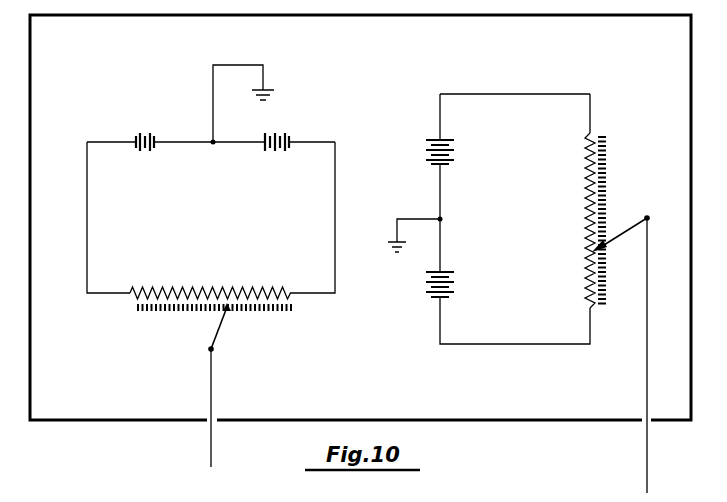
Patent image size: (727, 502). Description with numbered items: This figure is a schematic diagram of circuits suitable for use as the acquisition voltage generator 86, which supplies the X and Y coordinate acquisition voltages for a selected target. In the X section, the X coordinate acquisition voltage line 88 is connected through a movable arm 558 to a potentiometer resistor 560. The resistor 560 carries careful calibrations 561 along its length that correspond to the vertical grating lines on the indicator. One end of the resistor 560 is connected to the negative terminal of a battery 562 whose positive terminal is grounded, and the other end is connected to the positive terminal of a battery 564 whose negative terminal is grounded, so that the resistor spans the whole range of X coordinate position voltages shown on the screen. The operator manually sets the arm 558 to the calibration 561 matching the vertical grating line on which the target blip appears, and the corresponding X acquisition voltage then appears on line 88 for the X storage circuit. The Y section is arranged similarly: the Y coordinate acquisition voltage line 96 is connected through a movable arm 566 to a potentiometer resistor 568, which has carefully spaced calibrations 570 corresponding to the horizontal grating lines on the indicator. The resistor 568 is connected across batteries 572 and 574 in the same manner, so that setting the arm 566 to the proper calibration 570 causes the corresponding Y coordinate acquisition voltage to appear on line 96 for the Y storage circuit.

The acquisition voltage generator 86 is at (450, 421).
The X coordinate acquisition voltage line 88 is at (213, 446).
The Y coordinate acquisition voltage line 96 is at (648, 452).
The movable arm 558 is at (219, 330).
The potentiometer resistor 560 is at (225, 292).
The calibrations 561 is at (152, 319).
The battery 562 is at (143, 136).
The battery 564 is at (277, 136).
The movable arm 566 is at (628, 218).
The potentiometer resistor 568 is at (583, 226).
The calibrations 570 is at (606, 135).
The battery 572 is at (455, 272).
The battery 574 is at (452, 152).